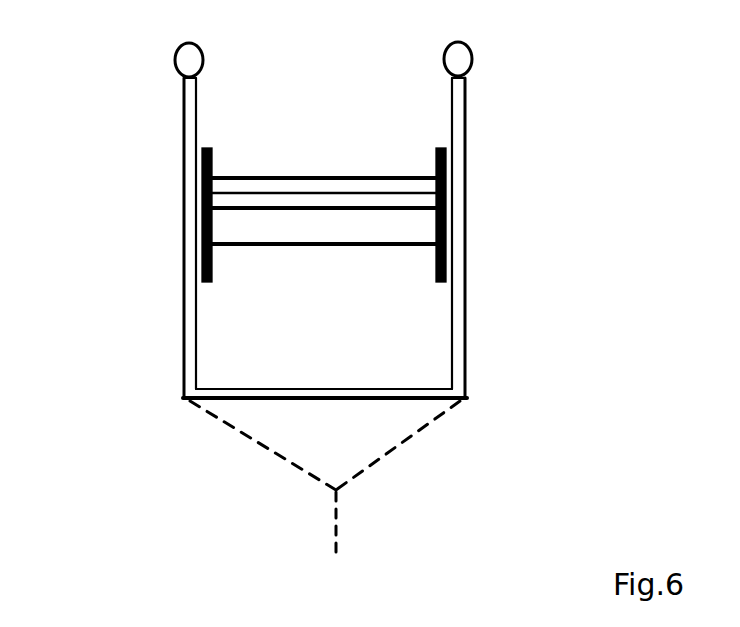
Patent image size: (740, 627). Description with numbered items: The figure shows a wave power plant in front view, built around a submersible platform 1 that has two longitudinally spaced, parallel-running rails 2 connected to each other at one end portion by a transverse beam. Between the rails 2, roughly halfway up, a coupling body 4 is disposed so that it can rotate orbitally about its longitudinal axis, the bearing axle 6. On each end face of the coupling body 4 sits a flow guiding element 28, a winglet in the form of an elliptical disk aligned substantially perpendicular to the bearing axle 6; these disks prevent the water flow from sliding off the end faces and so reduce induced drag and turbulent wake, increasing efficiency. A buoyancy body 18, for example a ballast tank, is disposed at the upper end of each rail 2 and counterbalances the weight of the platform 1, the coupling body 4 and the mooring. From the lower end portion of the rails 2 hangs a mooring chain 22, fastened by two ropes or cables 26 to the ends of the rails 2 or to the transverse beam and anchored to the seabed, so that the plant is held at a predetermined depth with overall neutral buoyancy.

The submersible platform 1 is at (125, 282).
The rails 2 is at (184, 351).
The coupling body 4 is at (333, 180).
The bearing axle 6 is at (420, 188).
The buoyancy body 18 is at (174, 58).
The mooring chain 22 is at (337, 520).
The ropes or cables 26 is at (397, 442).
The flow guiding element 28 is at (201, 219).